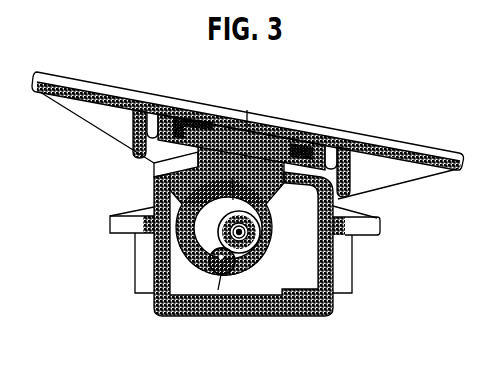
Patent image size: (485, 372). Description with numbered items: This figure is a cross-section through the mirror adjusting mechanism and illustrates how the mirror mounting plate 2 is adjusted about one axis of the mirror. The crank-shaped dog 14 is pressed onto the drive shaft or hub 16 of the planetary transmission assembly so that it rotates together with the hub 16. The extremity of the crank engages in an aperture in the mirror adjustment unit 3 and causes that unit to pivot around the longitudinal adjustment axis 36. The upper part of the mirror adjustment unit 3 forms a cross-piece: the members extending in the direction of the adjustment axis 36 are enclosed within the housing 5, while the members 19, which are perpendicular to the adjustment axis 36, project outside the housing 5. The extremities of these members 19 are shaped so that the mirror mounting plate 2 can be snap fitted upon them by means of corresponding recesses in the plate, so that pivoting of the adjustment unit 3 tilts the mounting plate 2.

The mirror mounting plate 2 is at (87, 87).
The mirror adjustment unit 3 is at (296, 137).
The housing 5 is at (223, 306).
The crank-shaped dog 14 is at (210, 260).
The drive shaft or hub 16 is at (246, 235).
The members 19 is at (182, 113).
The longitudinal adjustment axis 36 is at (248, 133).